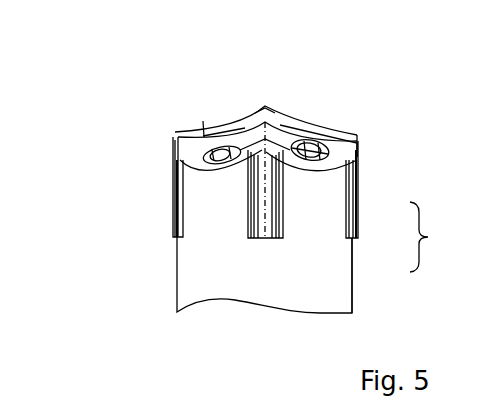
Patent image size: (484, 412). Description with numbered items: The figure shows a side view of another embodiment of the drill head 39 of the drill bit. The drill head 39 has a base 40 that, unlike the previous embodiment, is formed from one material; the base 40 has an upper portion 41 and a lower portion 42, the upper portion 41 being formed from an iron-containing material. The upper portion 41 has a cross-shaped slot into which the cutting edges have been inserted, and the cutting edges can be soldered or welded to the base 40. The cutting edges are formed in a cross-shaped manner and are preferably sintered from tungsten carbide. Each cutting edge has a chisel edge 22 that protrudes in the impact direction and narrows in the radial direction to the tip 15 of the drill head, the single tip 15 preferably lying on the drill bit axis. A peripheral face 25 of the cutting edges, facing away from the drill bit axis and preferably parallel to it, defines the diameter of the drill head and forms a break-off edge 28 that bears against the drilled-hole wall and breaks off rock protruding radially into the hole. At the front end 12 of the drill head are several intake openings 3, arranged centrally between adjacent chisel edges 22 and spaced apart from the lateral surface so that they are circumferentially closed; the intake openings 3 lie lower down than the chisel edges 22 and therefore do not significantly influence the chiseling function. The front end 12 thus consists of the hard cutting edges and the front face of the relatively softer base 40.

The drill head 39 is at (130, 80).
The intake opening 3 is at (228, 158).
The tip 15 is at (265, 107).
The chisel edge 22 is at (302, 118).
The front end 12 is at (203, 122).
The break-off edge 28 is at (260, 203).
The peripheral face 25 is at (168, 219).
The upper portion 41 is at (322, 192).
The lower portion 42 is at (330, 267).
The base 40 is at (437, 237).